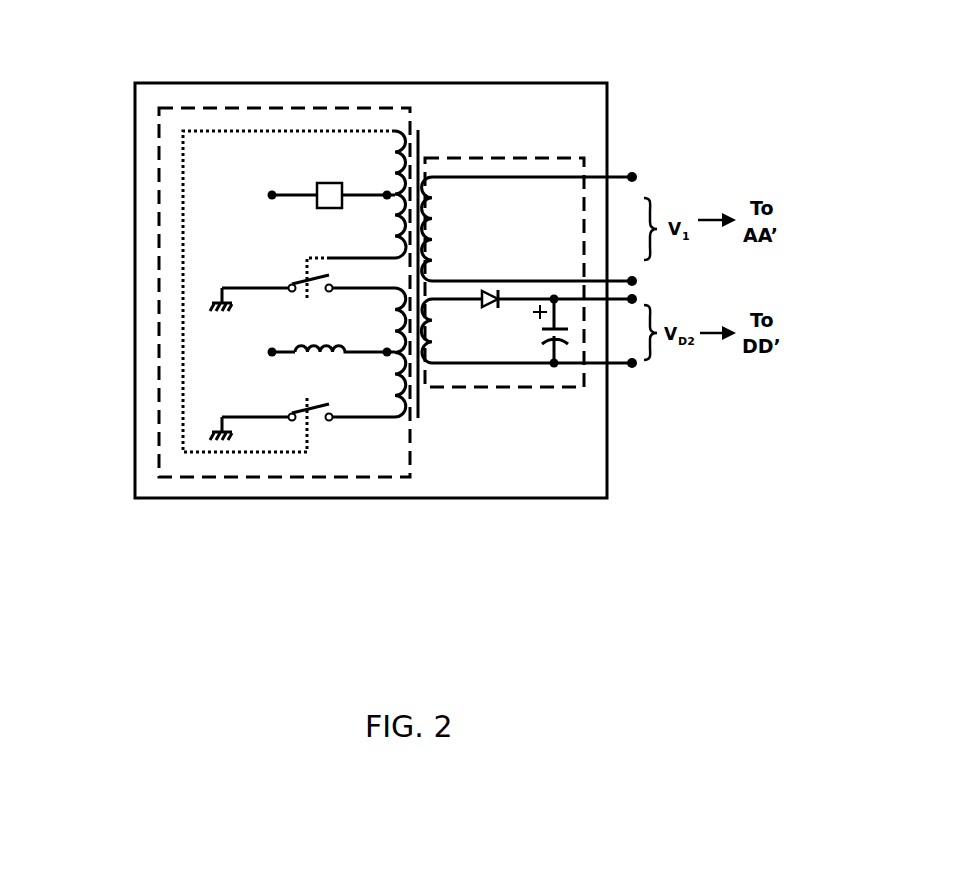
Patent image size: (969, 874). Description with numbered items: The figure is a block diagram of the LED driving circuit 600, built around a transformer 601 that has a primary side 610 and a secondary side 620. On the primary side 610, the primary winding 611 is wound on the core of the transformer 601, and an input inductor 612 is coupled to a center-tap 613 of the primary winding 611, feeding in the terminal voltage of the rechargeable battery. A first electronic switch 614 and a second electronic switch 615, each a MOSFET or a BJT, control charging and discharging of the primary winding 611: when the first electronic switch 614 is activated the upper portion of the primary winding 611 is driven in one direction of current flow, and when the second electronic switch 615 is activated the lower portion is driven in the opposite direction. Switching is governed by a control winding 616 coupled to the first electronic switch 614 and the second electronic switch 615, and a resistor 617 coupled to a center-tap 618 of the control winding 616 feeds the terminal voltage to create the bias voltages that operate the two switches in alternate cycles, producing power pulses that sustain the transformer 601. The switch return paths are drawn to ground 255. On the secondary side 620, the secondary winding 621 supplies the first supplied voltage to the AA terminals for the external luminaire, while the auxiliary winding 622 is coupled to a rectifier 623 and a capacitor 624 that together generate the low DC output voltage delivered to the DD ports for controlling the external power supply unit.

The LED driving circuit 600 is at (365, 76).
The transformer 601 is at (424, 128).
The primary side 610 is at (229, 99).
The primary winding 611 is at (403, 397).
The input inductor 612 is at (303, 360).
The center-tap 613 is at (384, 350).
The first electronic switch 614 is at (300, 297).
The second electronic switch 615 is at (320, 430).
The control winding 616 is at (393, 150).
The resistor 617 is at (315, 206).
The center-tap 618 is at (384, 193).
The secondary side 620 is at (516, 150).
The secondary winding 621 is at (440, 242).
The auxiliary winding 622 is at (440, 337).
The rectifier 623 is at (495, 307).
The capacitor 624 is at (563, 342).
The ground 255 is at (212, 308).